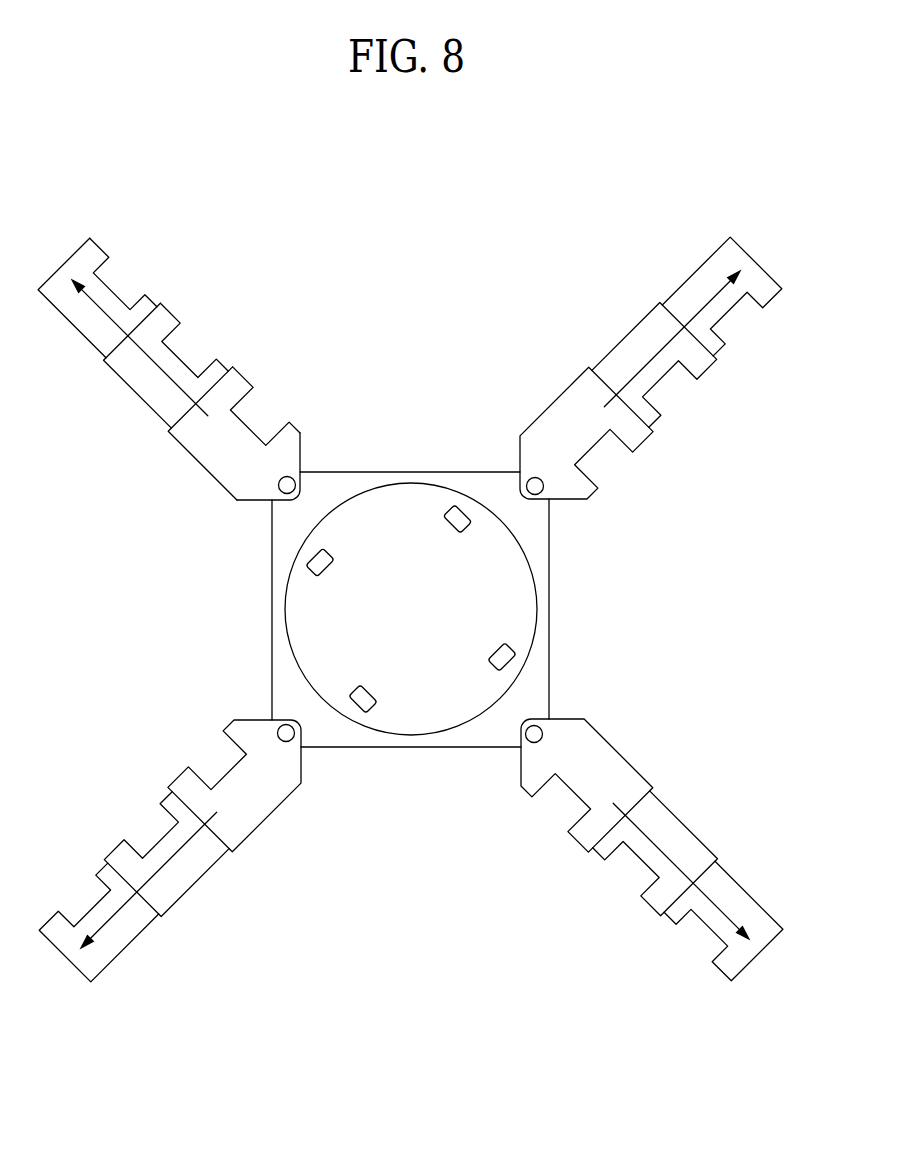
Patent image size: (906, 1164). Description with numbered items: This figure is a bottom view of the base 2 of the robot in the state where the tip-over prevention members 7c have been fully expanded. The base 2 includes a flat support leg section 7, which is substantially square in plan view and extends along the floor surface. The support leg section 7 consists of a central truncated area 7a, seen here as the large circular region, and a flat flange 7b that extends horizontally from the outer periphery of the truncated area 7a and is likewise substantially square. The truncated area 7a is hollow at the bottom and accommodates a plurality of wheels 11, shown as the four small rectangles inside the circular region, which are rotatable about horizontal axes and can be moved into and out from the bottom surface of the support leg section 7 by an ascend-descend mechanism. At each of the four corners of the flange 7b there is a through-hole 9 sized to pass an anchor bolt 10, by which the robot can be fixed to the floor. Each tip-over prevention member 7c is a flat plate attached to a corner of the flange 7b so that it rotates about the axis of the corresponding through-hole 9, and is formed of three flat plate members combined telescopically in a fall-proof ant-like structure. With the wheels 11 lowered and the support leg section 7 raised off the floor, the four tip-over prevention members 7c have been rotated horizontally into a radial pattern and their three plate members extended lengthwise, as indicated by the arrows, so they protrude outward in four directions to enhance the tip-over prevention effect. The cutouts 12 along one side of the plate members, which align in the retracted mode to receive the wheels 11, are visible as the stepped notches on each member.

The base 2 is at (414, 334).
The support leg section 7 is at (262, 658).
The truncated area 7a is at (535, 628).
The flange 7b is at (550, 568).
The tip-over prevention member 7c is at (217, 455).
The through-hole 9 is at (305, 485).
The anchor bolt 10 is at (280, 485).
The wheel 11 is at (328, 572).
The cutout 12 is at (110, 282).